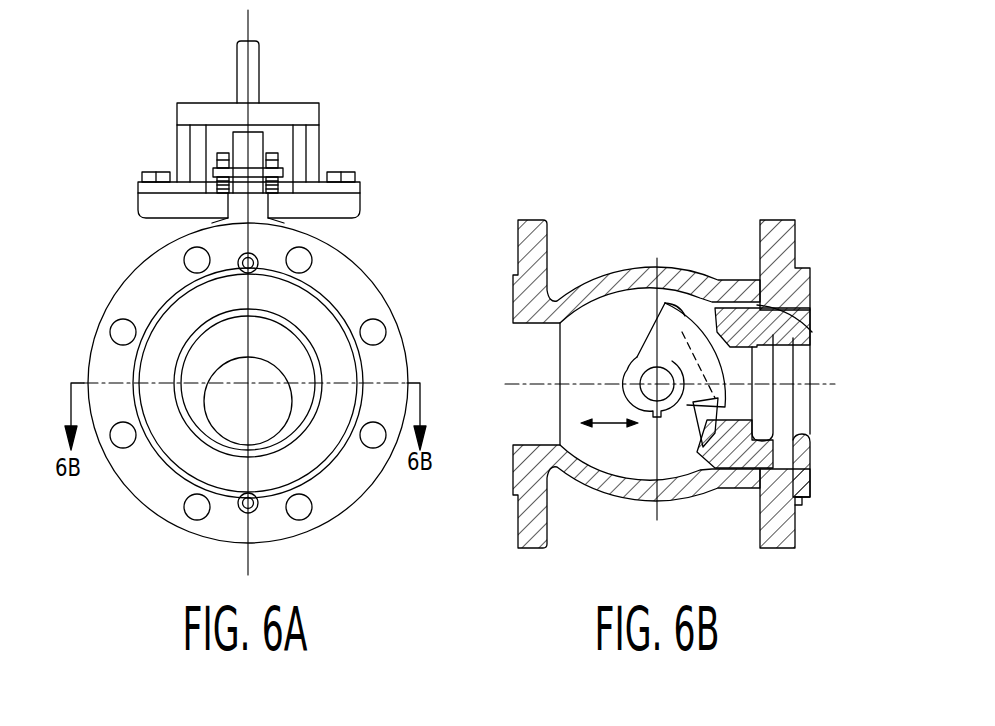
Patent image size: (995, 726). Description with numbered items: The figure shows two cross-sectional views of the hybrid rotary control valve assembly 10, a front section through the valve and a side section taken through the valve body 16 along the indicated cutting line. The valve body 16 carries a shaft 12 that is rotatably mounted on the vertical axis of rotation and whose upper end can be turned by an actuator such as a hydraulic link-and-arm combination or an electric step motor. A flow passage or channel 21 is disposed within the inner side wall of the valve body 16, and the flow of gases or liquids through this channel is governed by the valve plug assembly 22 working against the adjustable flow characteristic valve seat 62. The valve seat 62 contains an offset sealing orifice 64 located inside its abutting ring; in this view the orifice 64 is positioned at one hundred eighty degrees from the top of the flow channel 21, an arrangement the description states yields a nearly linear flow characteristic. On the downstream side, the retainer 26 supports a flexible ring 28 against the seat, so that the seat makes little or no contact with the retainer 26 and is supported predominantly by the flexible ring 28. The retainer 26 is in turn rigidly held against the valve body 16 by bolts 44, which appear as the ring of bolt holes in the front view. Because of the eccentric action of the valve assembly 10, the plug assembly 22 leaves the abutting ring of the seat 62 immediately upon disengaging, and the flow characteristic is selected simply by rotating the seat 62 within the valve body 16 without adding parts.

In FIG. 6A, the rotary control valve assembly 10 is at (340, 142).
In FIG. 6A, the shaft 12 is at (259, 77).
In FIG. 6A, the valve body 16 is at (143, 277).
In FIG. 6B, the valve body 16 is at (600, 282).
In FIG. 6B, the flow passage 21 is at (615, 427).
In FIG. 6B, the valve plug assembly 22 is at (660, 334).
In FIG. 6A, the retainer 26 is at (312, 317).
In FIG. 6B, the retainer 26 is at (805, 478).
In FIG. 6B, the flexible ring 28 is at (806, 308).
In FIG. 6A, the bolts 44 is at (186, 503).
In FIG. 6A, the adjustable flow characteristic valve seat 62 is at (197, 372).
In FIG. 6B, the adjustable flow characteristic valve seat 62 is at (733, 452).
In FIG. 6A, the offset sealing orifice 64 is at (227, 423).